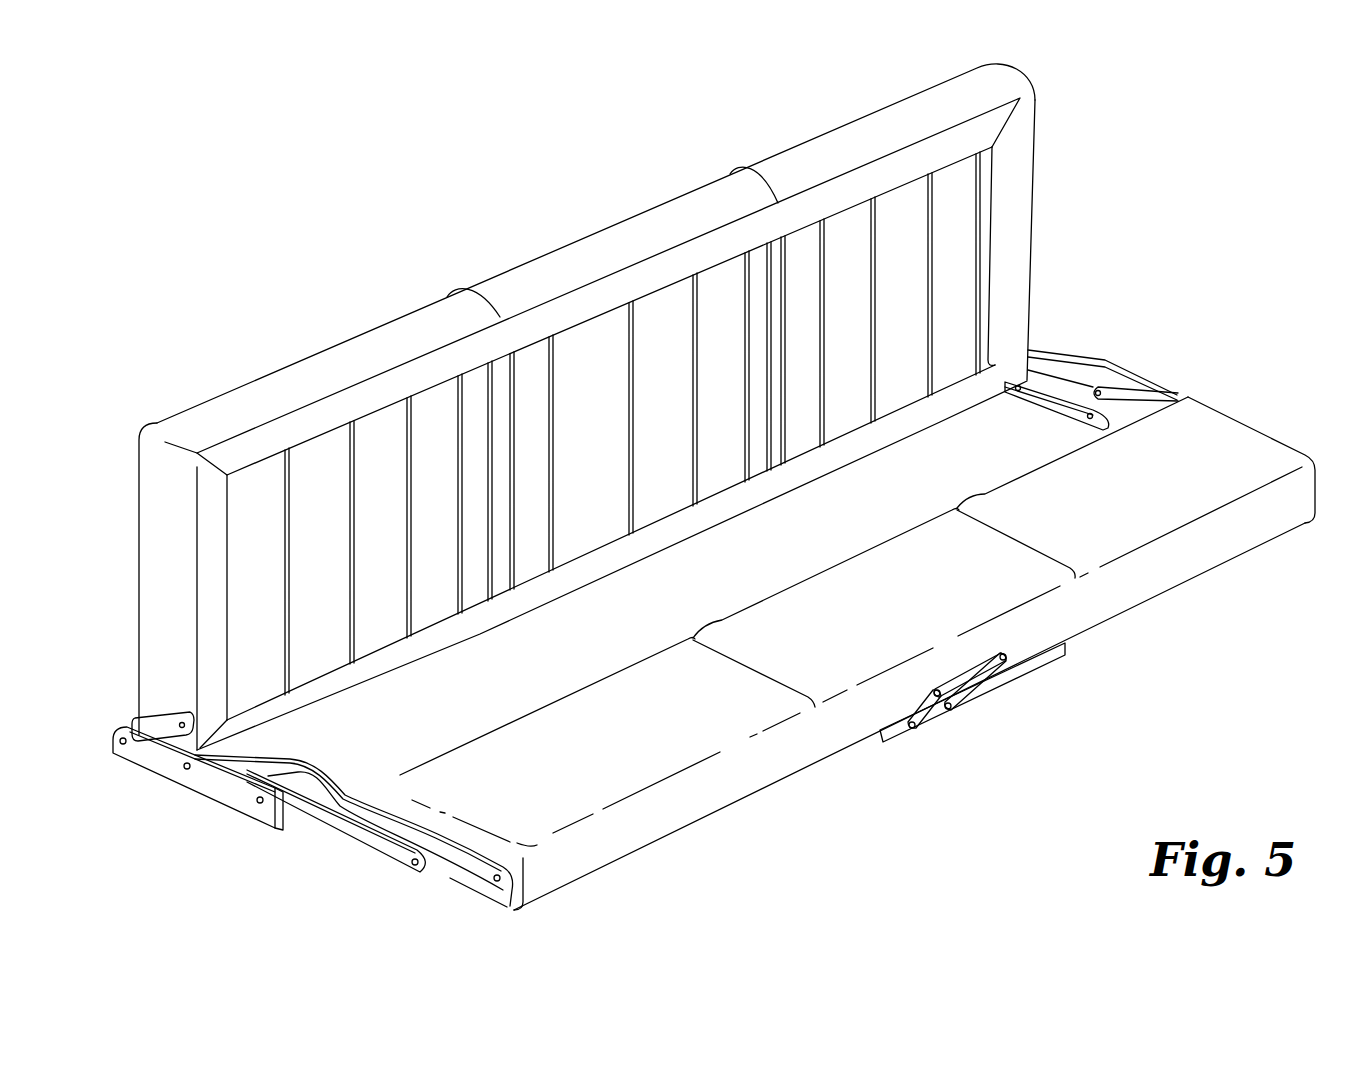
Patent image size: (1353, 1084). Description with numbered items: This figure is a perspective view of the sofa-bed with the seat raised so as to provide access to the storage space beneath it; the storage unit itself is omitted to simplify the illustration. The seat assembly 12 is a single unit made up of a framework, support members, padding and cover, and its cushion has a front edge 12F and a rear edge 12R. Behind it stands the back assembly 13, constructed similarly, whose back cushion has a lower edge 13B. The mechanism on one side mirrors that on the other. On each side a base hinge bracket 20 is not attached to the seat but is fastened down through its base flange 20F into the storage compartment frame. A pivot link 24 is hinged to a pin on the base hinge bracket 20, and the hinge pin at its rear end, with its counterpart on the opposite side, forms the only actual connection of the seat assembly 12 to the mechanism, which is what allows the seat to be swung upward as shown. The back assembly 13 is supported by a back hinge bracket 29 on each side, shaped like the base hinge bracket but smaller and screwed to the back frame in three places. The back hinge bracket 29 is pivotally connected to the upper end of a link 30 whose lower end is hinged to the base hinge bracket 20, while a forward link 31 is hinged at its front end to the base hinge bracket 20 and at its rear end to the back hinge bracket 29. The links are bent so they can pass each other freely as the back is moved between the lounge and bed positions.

The seat assembly 12 is at (643, 407).
The front edge of the seat cushion 12F is at (547, 217).
The rear edge of the seat cushion 12R is at (537, 609).
The back assembly 13 is at (859, 631).
The lower edge of the back cushion 13B is at (1270, 513).
The base hinge bracket 20 is at (212, 785).
The base flange 20F is at (1047, 398).
The pivot link 24 is at (160, 715).
The back hinge bracket 29 is at (450, 878).
The link 30 is at (385, 803).
The forward link 31 is at (315, 810).